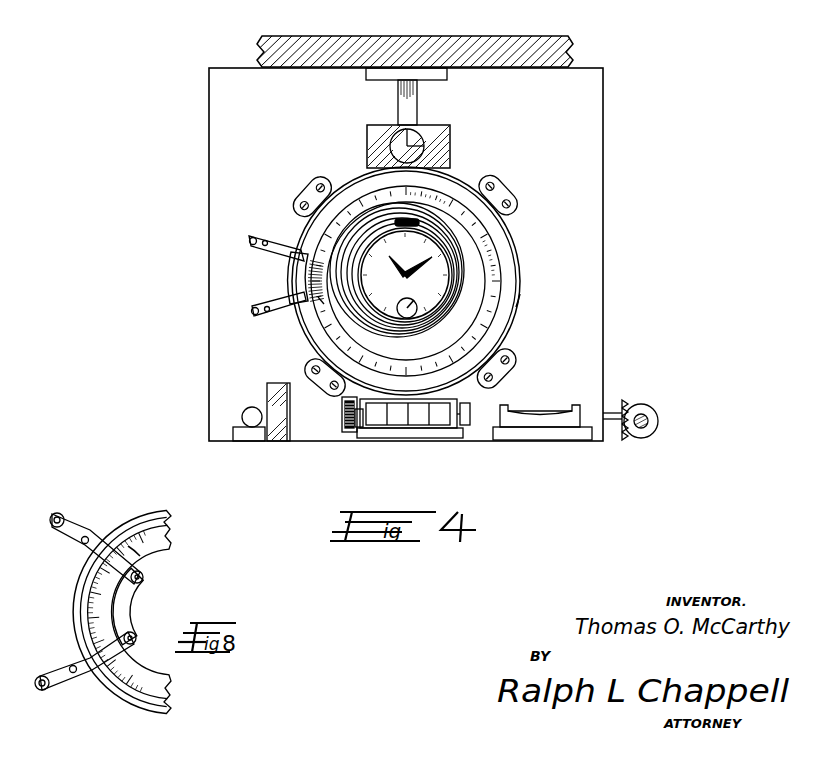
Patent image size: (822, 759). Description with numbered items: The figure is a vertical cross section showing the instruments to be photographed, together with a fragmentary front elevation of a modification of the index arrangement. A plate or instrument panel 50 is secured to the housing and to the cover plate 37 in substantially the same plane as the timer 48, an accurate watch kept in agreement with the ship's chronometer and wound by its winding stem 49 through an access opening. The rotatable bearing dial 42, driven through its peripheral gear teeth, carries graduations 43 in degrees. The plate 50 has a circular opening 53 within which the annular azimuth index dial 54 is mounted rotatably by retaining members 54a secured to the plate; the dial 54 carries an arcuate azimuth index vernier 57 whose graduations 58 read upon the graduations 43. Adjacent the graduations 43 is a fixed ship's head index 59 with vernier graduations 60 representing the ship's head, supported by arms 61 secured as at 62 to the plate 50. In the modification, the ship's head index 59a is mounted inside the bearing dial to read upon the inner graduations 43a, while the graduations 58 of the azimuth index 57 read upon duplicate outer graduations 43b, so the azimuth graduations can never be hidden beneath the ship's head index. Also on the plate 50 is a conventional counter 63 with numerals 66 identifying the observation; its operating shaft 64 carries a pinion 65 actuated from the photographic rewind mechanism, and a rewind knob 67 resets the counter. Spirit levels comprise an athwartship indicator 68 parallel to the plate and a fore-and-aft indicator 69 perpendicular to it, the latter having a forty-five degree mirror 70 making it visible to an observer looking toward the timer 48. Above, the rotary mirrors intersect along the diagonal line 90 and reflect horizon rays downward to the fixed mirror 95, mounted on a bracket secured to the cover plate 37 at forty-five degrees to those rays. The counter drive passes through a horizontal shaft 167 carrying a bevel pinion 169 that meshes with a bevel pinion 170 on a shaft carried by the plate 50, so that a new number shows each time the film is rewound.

In FIG. 4, the cover plate 37 is at (568, 52).
In FIG. 4, the bearing dial 42 is at (462, 207).
In FIG. 8, the bearing dial 42 is at (160, 689).
In FIG. 4, the graduations 43 is at (482, 210).
In FIG. 8, the inner graduations 43a is at (162, 540).
In FIG. 8, the outer graduations 43b is at (134, 545).
In FIG. 4, the timer 48 is at (452, 305).
In FIG. 4, the winding stem 49 is at (404, 220).
In FIG. 4, the plate or instrument panel 50 is at (622, 252).
In FIG. 4, the circular opening 53 is at (521, 303).
In FIG. 4, the annular azimuth index dial 54 is at (485, 210).
In FIG. 4, the retaining members 54a is at (503, 373).
In FIG. 4, the arcuate azimuth index vernier 57 is at (503, 232).
In FIG. 8, the arcuate azimuth index vernier 57 is at (136, 700).
In FIG. 4, the graduations 58 is at (500, 270).
In FIG. 8, the graduations 58 is at (158, 521).
In FIG. 4, the ship's head index 59 is at (298, 268).
In FIG. 8, the ship's head index 59a is at (128, 617).
In FIG. 4, the vernier graduations 60 is at (317, 305).
In FIG. 4, the arms 61 is at (303, 250).
In FIG. 8, the arms 61 is at (68, 515).
In FIG. 4, the securing points 62 is at (264, 240).
In FIG. 8, the securing points 62 is at (84, 543).
In FIG. 4, the counter 63 is at (420, 432).
In FIG. 4, the operating shaft 64 is at (359, 415).
In FIG. 4, the pinion 65 is at (342, 430).
In FIG. 4, the numerals 66 is at (397, 425).
In FIG. 4, the rewind knob 67 is at (467, 430).
In FIG. 4, the athwartship indicator 68 is at (576, 405).
In FIG. 4, the fore-and-aft indicator 69 is at (242, 419).
In FIG. 4, the forty-five degree mirror 70 is at (270, 441).
In FIG. 4, the diagonal line 90 is at (398, 100).
In FIG. 4, the fixed mirror 95 is at (437, 125).
In FIG. 4, the horizontal shaft 167 is at (649, 423).
In FIG. 4, the bevel pinion 169 is at (650, 410).
In FIG. 4, the bevel pinion 170 is at (625, 406).